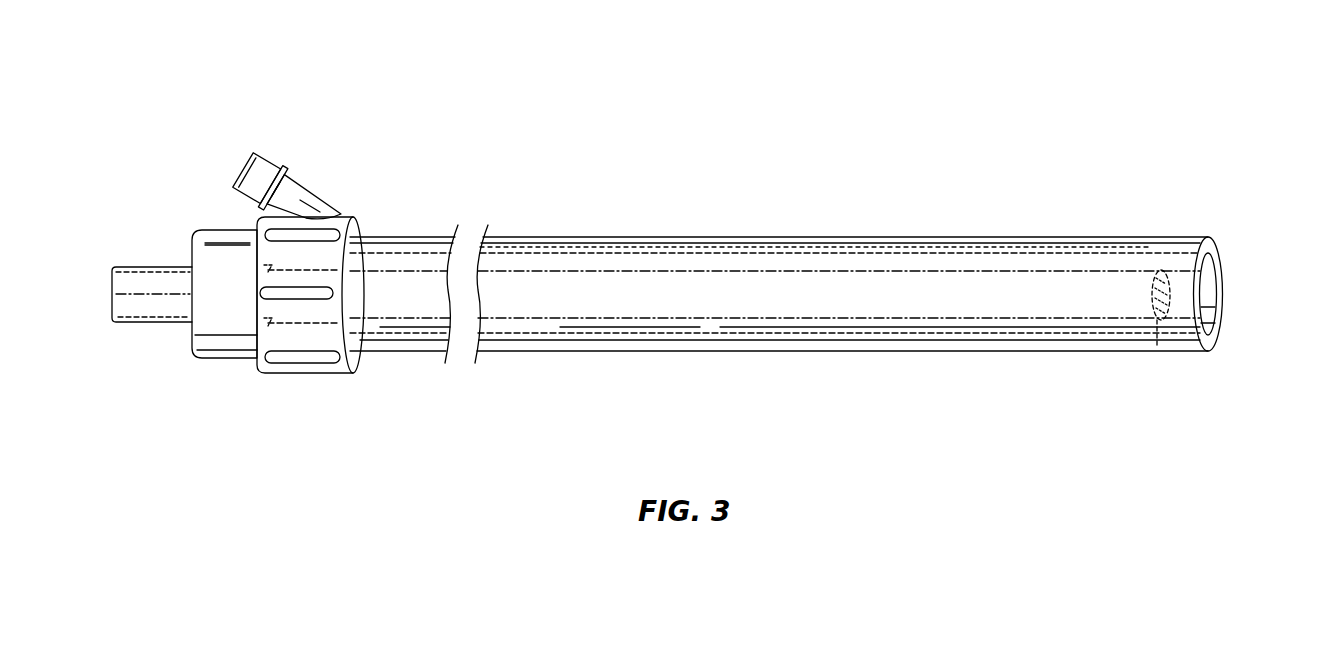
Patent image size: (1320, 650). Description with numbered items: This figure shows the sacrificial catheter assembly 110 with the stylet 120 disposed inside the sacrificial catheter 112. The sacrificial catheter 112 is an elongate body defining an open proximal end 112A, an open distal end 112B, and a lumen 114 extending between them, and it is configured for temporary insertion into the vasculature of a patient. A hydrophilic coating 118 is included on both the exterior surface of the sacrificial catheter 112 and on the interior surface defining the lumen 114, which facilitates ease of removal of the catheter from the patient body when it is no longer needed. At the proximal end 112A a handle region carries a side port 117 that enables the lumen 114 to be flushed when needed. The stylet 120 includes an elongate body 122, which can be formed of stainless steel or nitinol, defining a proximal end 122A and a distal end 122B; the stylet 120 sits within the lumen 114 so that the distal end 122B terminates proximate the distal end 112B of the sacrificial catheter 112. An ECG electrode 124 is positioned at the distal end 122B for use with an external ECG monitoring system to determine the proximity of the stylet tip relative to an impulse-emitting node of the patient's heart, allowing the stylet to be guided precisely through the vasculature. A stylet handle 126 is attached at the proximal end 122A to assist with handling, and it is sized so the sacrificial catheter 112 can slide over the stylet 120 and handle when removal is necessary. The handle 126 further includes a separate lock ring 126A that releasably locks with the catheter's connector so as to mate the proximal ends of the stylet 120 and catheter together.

The sacrificial catheter assembly 110 is at (692, 237).
The sacrificial catheter 112 is at (595, 342).
The open proximal end 112A is at (352, 253).
The open distal end 112B is at (1208, 250).
The lumen 114 is at (1042, 262).
The side port 117 is at (282, 150).
The hydrophilic coating 118 is at (905, 247).
The stylet 120 is at (693, 318).
The stylet body 122 is at (582, 260).
The proximal end of stylet body 122A is at (285, 310).
The distal end of stylet body 122B is at (1157, 340).
The electrode 124 is at (1173, 253).
The stylet handle 126 is at (150, 274).
The lock ring 126A is at (220, 318).